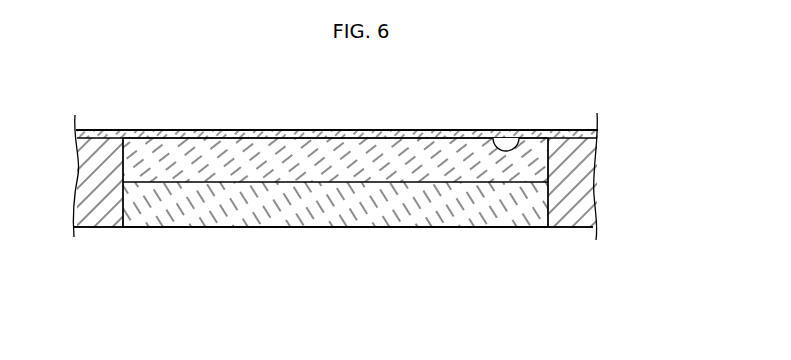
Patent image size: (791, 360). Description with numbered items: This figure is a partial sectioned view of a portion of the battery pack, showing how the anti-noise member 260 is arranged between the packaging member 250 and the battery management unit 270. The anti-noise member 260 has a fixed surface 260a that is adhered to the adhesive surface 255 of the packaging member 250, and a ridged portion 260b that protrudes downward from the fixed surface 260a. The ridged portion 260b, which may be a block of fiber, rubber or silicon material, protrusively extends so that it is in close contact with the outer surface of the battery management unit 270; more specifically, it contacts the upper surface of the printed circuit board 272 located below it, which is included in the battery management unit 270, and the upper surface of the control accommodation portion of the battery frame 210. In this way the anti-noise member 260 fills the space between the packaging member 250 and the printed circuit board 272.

The battery frame 210 is at (587, 183).
The packaging member 250 is at (558, 130).
The adhesive surface 255 is at (493, 133).
The anti-noise member 260 is at (153, 152).
The fixed surface 260a is at (208, 134).
The ridged portion 260b is at (192, 183).
The battery management unit 270 is at (437, 284).
The printed circuit board 272 is at (417, 210).